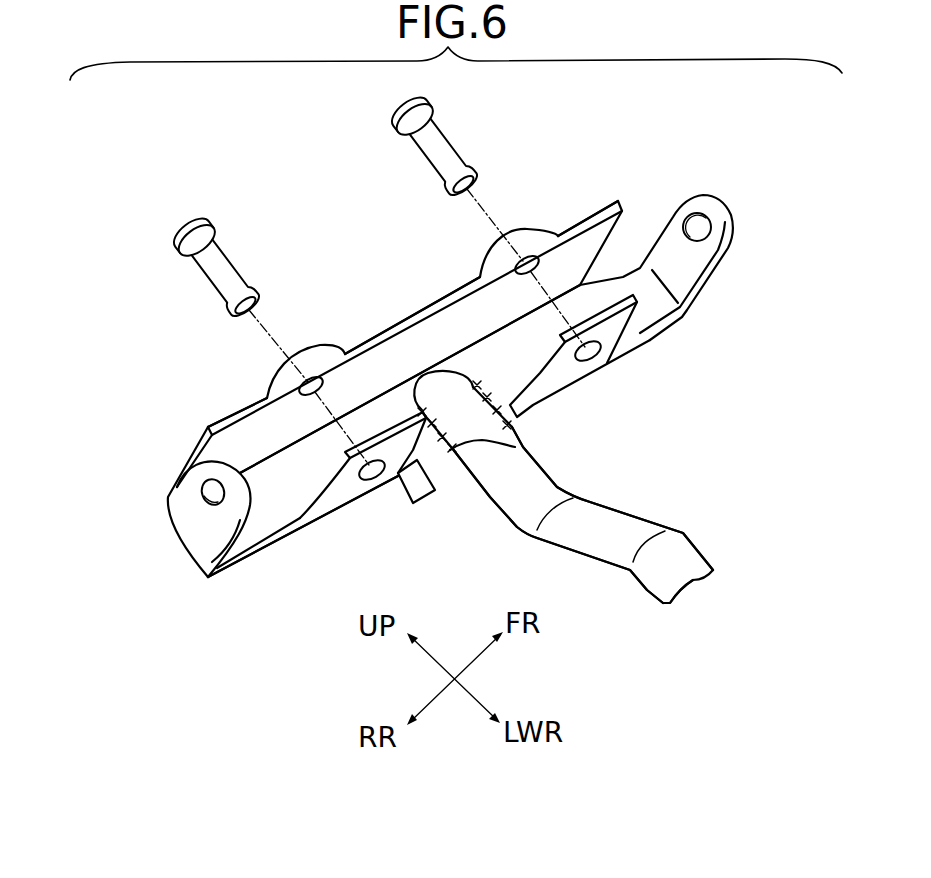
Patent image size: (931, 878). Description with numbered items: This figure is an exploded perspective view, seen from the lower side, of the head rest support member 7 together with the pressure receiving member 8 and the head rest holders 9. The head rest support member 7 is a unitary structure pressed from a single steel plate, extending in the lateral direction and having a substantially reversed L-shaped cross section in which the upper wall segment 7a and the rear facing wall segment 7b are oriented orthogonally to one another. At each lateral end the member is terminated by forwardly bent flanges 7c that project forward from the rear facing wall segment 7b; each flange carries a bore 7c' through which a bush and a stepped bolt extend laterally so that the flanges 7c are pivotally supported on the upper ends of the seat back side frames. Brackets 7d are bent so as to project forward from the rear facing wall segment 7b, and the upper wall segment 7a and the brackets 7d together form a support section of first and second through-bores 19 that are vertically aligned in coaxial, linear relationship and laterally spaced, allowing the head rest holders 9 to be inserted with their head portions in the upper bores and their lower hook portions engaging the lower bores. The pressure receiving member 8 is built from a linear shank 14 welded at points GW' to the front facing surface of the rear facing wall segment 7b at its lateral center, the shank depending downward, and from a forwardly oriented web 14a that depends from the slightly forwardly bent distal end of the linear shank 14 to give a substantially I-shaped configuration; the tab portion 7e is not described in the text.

The head rest support member 7 is at (594, 196).
The upper wall segment 7a is at (390, 341).
The rear facing wall segment 7b is at (280, 510).
The forwardly bent flange 7c is at (469, 411).
The bore 7c' is at (451, 342).
The bracket 7d is at (358, 490).
The welding tab of bracket 7e is at (443, 460).
The pressure receiving member 8 is at (689, 526).
The head rest holder 9 is at (445, 148).
The linear shank 14 is at (600, 520).
The forwardly oriented web 14a is at (663, 570).
The through-bore 19 is at (300, 383).
The welding points GW' is at (513, 426).